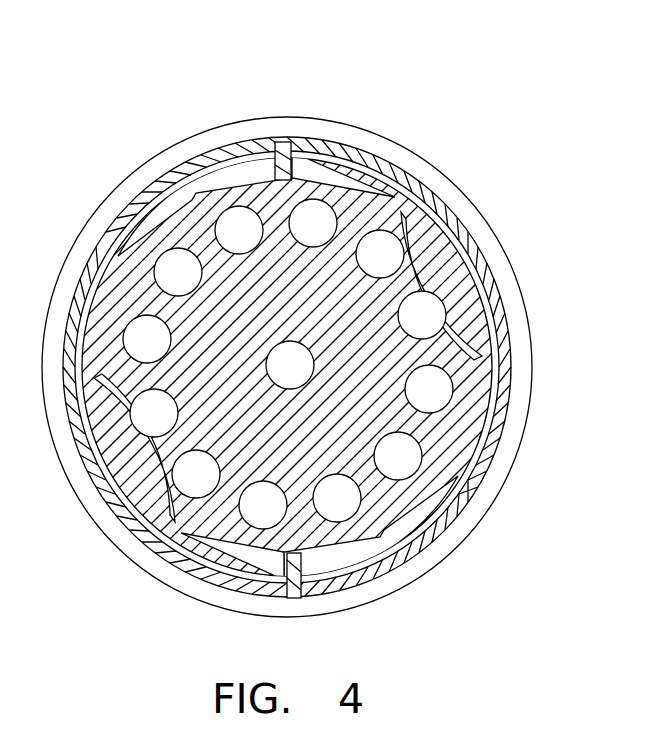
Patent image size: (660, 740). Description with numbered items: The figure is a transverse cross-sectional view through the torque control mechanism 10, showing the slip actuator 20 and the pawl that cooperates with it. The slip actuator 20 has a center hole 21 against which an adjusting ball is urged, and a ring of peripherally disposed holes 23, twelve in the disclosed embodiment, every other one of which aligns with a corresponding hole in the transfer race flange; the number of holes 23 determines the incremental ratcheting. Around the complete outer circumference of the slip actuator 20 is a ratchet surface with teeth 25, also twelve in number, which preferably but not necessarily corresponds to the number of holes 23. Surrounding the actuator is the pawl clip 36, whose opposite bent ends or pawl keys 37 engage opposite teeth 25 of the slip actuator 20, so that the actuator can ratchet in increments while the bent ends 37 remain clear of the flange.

The fiber optic cable 10 is at (372, 122).
The slip actuator 20 is at (428, 257).
The center hole 21 is at (292, 356).
The peripherally disposed holes 23 is at (397, 450).
The teeth 25 is at (392, 192).
The pawl clip 36 is at (108, 201).
The pawl keys 37 is at (283, 148).